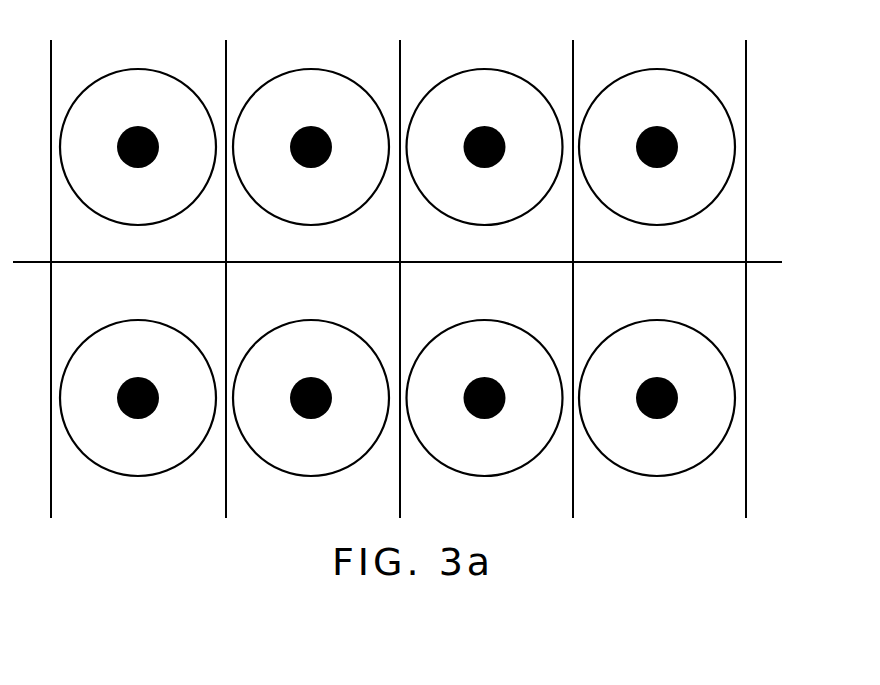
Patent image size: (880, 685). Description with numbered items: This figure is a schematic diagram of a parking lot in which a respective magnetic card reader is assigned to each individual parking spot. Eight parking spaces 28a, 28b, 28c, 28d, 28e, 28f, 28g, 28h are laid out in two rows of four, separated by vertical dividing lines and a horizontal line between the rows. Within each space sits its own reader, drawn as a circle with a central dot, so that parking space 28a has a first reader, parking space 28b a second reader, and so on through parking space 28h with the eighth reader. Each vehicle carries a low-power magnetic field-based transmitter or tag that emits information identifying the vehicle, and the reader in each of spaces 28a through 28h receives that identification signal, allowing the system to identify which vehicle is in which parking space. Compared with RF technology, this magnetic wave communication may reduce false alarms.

The parking space 28a is at (138, 145).
The parking space 28b is at (313, 145).
The parking space 28c is at (486, 145).
The parking space 28d is at (659, 145).
The parking space 28e is at (138, 396).
The parking space 28f is at (313, 396).
The parking space 28g is at (486, 396).
The parking space 28h is at (659, 396).